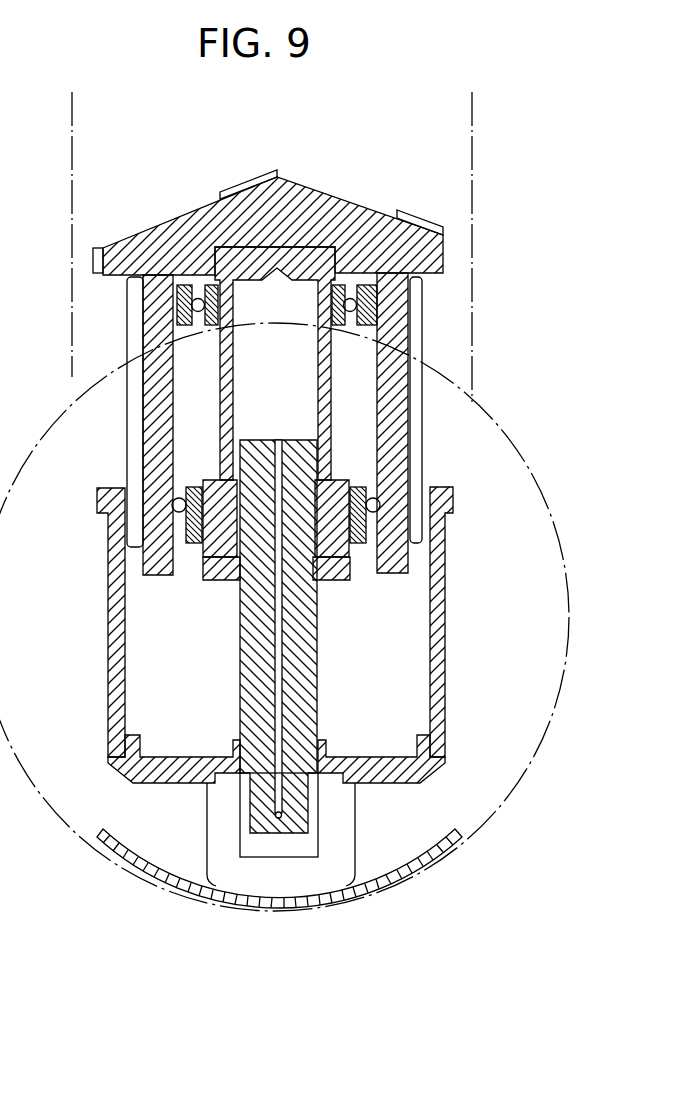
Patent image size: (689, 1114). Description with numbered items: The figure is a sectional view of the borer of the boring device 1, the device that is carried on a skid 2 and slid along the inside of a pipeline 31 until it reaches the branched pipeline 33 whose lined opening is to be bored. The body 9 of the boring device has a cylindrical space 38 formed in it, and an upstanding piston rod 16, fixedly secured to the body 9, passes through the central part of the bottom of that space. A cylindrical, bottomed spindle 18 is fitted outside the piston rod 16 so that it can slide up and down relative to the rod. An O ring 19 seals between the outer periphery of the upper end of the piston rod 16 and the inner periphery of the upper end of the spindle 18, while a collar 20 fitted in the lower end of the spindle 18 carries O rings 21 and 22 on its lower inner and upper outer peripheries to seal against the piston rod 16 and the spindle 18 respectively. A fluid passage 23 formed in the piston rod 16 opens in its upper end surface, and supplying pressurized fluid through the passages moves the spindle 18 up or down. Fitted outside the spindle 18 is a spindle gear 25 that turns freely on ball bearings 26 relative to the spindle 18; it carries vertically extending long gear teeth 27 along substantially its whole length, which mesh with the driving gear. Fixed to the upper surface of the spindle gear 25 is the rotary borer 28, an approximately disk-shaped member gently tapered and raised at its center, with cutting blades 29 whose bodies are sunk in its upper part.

The boring device 1 is at (526, 179).
The skid 2 is at (278, 915).
The boring device body 9 is at (410, 772).
The piston rod 16 is at (333, 640).
The spindle 18 is at (356, 396).
The O ring 19 is at (377, 452).
The collar 20 is at (341, 578).
The O ring 21 is at (247, 580).
The O ring 22 is at (205, 562).
The fluid passage 23 is at (277, 793).
The spindle gear 25 is at (324, 424).
The ball bearings 26 is at (190, 310).
The long gear teeth 27 is at (413, 350).
The rotary borer 28 is at (352, 190).
The cutting blades 29 is at (250, 178).
The pipeline 31 is at (538, 494).
The branched pipeline 33 is at (473, 134).
The cylindrical space 38 is at (143, 698).